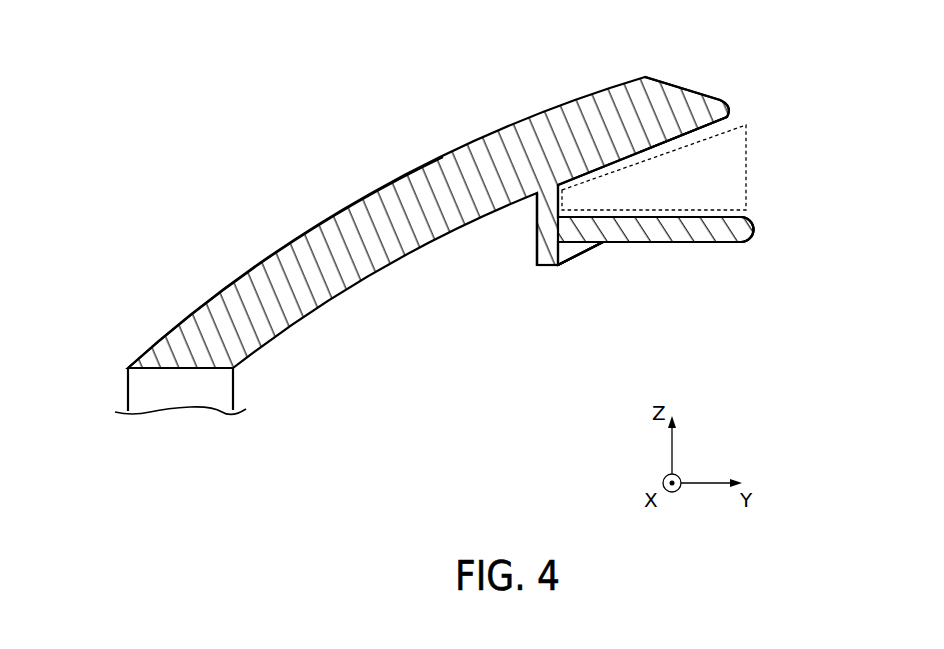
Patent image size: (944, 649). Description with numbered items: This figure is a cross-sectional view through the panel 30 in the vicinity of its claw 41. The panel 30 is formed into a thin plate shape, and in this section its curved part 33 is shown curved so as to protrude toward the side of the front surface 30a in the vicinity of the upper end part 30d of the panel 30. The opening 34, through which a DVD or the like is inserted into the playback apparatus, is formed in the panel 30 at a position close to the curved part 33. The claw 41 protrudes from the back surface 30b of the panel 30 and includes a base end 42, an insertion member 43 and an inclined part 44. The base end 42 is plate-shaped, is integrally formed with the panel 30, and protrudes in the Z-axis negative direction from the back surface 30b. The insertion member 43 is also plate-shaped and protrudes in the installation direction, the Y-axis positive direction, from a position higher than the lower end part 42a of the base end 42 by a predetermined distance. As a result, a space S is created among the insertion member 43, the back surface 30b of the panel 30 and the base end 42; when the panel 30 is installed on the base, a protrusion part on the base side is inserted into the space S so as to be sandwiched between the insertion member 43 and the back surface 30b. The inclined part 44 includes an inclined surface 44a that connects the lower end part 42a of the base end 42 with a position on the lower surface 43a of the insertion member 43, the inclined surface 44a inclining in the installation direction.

The panel 30 is at (528, 113).
The front surface 30a is at (248, 270).
The back surface 30b is at (688, 136).
The upper end part 30d is at (685, 100).
The curved part 33 is at (358, 218).
The opening 34 is at (137, 383).
The claw 41 is at (765, 213).
The base end 42 is at (547, 226).
The lower end part 42a is at (550, 265).
The insertion member 43 is at (735, 232).
The lower surface 43a is at (678, 243).
The inclined part 44 is at (577, 265).
The inclined surface 44a is at (598, 245).
The space S is at (746, 160).